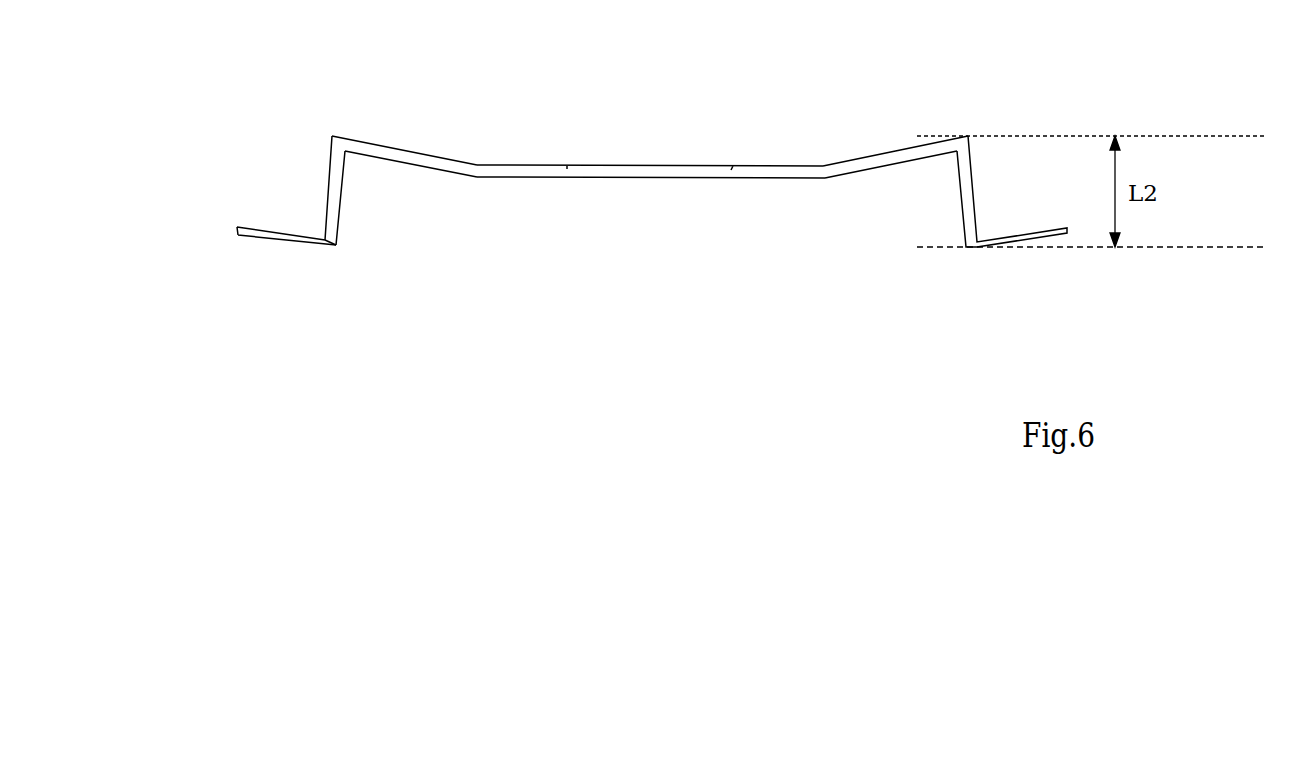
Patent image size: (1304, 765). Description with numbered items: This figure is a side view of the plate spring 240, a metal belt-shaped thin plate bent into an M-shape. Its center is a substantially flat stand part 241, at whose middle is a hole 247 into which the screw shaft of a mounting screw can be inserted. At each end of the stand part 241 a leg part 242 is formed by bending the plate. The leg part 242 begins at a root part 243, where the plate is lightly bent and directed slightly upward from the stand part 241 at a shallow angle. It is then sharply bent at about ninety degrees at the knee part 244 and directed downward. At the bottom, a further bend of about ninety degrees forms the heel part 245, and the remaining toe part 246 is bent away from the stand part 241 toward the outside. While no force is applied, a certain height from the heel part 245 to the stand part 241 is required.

The plate spring 240 is at (616, 180).
The stand part 241 is at (523, 165).
The leg part 242 is at (419, 116).
The root part 243 is at (477, 178).
The knee part 244 is at (332, 136).
The heel part 245 is at (335, 246).
The toe part 246 is at (237, 230).
The hole 247 is at (733, 168).